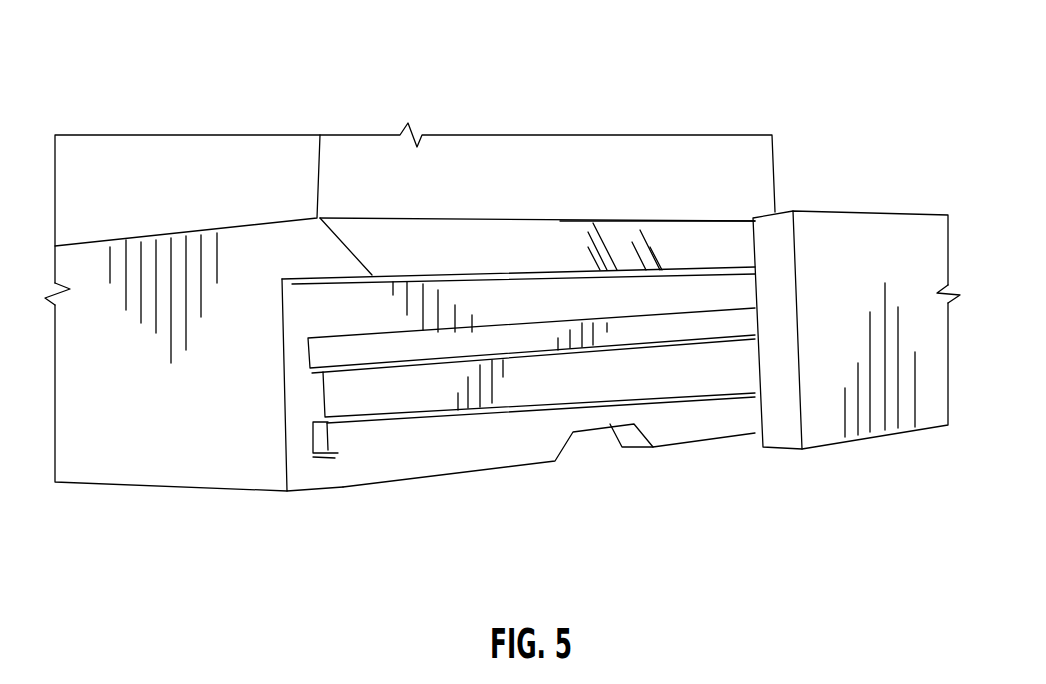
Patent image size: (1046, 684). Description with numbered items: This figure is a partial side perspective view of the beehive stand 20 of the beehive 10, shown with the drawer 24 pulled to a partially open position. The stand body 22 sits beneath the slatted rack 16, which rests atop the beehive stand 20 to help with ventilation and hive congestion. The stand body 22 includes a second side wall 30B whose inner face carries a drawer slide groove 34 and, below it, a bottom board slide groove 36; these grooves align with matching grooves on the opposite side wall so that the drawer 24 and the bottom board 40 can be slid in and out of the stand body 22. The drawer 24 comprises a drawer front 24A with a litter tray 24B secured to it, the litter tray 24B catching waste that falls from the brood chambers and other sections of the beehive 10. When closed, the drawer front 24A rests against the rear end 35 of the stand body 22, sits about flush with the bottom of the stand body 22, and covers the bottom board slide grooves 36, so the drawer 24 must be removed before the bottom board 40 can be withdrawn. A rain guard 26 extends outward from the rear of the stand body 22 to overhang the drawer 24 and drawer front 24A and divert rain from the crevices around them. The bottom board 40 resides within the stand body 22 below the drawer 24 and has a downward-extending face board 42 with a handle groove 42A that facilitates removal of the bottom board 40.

The beehive 10 is at (644, 92).
The slatted rack 16 is at (462, 163).
The beehive stand 20 is at (248, 515).
The stand body 22 is at (668, 253).
The drawer 24 is at (786, 455).
The drawer front 24A is at (868, 258).
The litter tray 24B is at (627, 362).
The rain guard 26 is at (695, 255).
The second side wall 30B is at (130, 463).
The drawer slide groove 34 is at (317, 350).
The rear end 35 is at (482, 303).
The bottom board slide groove 36 is at (313, 457).
The bottom board 40 is at (438, 464).
The face board 42 is at (480, 449).
The handle groove 42A is at (637, 447).